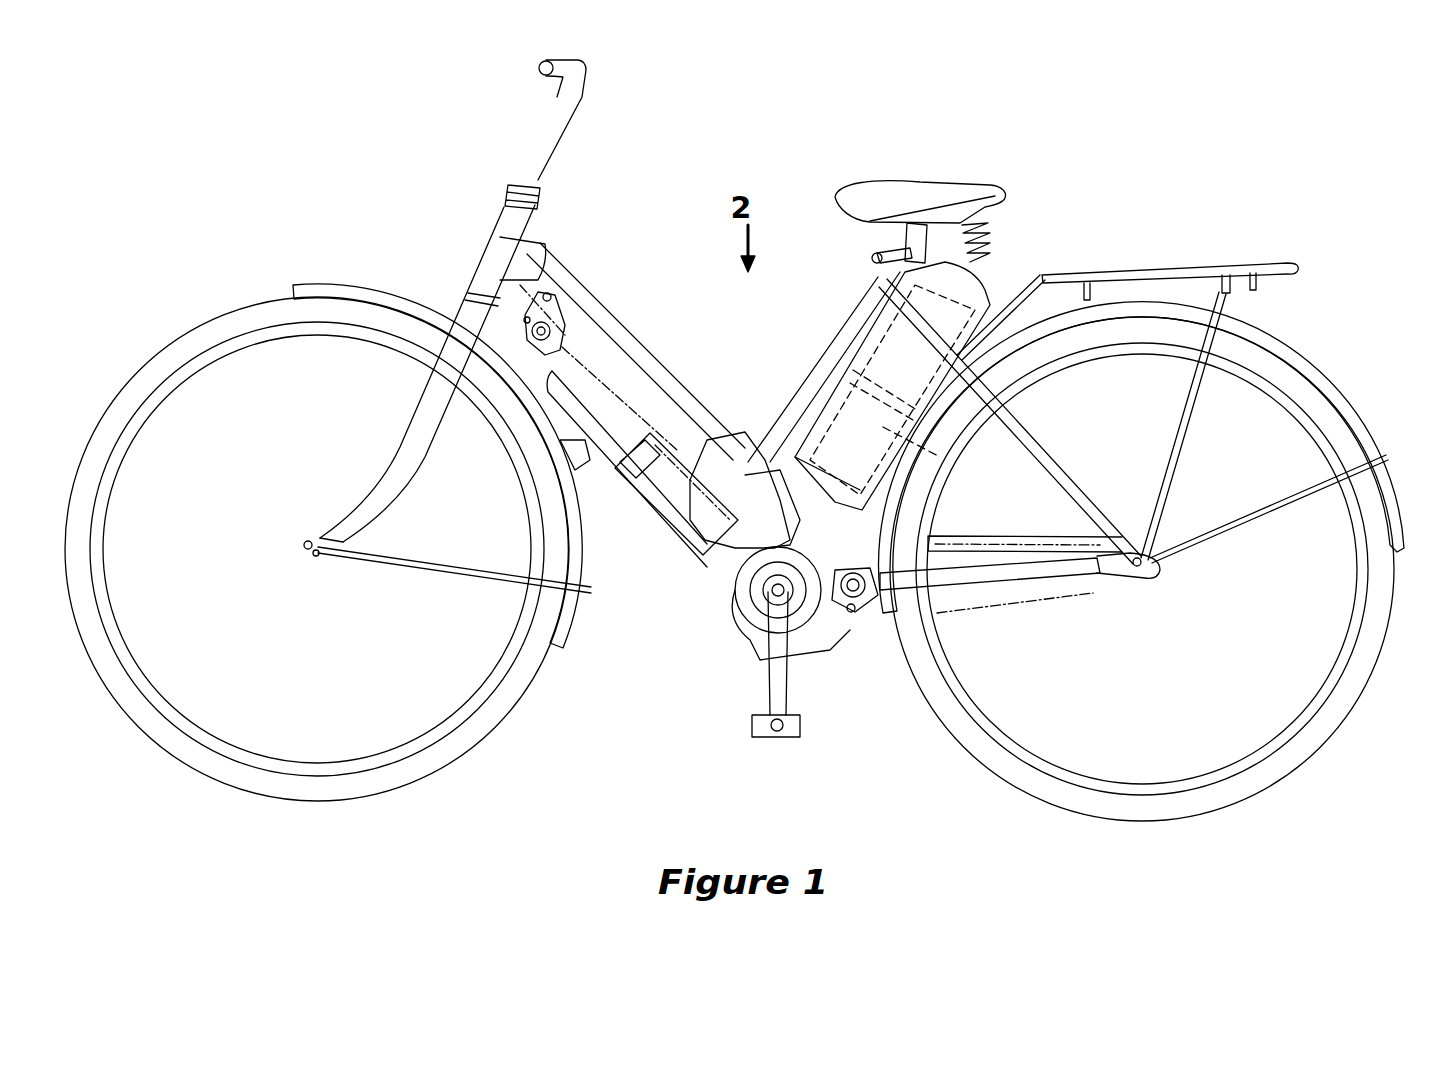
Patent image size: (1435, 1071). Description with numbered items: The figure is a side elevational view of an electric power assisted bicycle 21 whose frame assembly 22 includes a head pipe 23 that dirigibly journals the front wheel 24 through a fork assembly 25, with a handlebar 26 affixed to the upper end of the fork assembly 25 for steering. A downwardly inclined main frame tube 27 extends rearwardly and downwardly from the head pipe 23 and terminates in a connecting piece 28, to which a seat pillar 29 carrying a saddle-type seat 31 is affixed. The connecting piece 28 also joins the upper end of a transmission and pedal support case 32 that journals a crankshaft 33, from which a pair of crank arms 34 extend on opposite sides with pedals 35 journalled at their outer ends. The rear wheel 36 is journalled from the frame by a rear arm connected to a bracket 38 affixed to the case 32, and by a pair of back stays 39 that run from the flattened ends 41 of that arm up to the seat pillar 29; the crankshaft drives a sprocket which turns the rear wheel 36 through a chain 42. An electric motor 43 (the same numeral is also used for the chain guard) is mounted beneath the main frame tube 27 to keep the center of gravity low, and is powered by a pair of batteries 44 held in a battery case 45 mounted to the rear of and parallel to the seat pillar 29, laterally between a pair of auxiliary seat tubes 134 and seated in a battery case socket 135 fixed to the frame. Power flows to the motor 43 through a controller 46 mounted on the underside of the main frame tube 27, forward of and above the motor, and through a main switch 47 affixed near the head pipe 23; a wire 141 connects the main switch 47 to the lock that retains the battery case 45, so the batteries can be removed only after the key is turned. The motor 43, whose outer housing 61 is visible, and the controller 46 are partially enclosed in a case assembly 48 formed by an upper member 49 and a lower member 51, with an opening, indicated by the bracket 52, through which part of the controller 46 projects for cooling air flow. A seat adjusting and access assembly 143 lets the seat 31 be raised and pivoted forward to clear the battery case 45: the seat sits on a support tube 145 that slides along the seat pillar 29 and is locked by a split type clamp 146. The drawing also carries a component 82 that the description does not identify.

The electric power assisted bicycle 21 is at (426, 216).
The frame assembly 22 is at (662, 360).
The head pipe 23 is at (510, 218).
The front wheel 24 is at (518, 722).
The fork assembly 25 is at (398, 444).
The handlebar 26 is at (585, 87).
The main frame tube 27 is at (640, 330).
The connecting piece 28 is at (733, 457).
The seat pillar 29 is at (780, 417).
The saddle-type seat 31 is at (918, 180).
The transmission and pedal support case 32 is at (750, 627).
The crankshaft 33 is at (790, 597).
The crank arms 34 is at (760, 697).
The pedals 35 is at (800, 727).
The rear wheel 36 is at (1350, 728).
The bracket 38 is at (853, 620).
The back stays 39 is at (1060, 457).
The flattened ends 41 is at (1143, 585).
The chain 42 is at (1070, 600).
The electric motor 43 is at (683, 513).
The batteries 44 is at (917, 413).
The battery case 45 is at (980, 283).
The controller 46 is at (585, 380).
The main switch 47 is at (480, 305).
The case assembly 48 is at (545, 243).
The upper member 49 is at (577, 275).
The lower member 51 is at (643, 537).
The bracket 52 is at (577, 460).
The outer housing 61 is at (737, 580).
The controller 82 is at (695, 520).
The auxiliary seat tubes 134 is at (907, 463).
The battery case socket 135 is at (923, 517).
The wire 141 is at (698, 380).
The seat adjusting and access assembly 143 is at (800, 380).
The support tube 145 is at (877, 240).
The split type clamp 146 is at (870, 258).